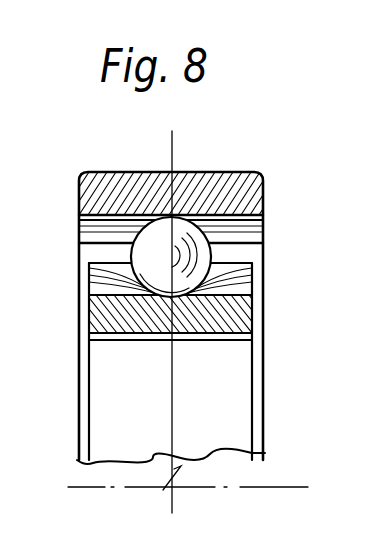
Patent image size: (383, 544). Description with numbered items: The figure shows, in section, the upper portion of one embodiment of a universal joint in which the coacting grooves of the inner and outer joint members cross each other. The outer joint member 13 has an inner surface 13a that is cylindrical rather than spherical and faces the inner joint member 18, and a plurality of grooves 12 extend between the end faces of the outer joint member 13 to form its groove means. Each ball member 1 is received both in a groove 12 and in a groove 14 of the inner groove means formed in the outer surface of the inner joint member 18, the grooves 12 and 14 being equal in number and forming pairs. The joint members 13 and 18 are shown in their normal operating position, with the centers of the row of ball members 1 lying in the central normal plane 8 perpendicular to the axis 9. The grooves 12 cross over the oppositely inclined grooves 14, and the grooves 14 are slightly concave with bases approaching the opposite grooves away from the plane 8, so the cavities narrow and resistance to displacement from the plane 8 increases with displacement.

The outer joint member 13 is at (105, 177).
The inner surface 13a is at (82, 221).
The ball member 1 is at (135, 247).
The groove 12 is at (248, 232).
The groove 14 is at (238, 278).
The inner joint member 18 is at (233, 316).
The central normal plane 8 is at (173, 139).
The axis 9 is at (274, 487).